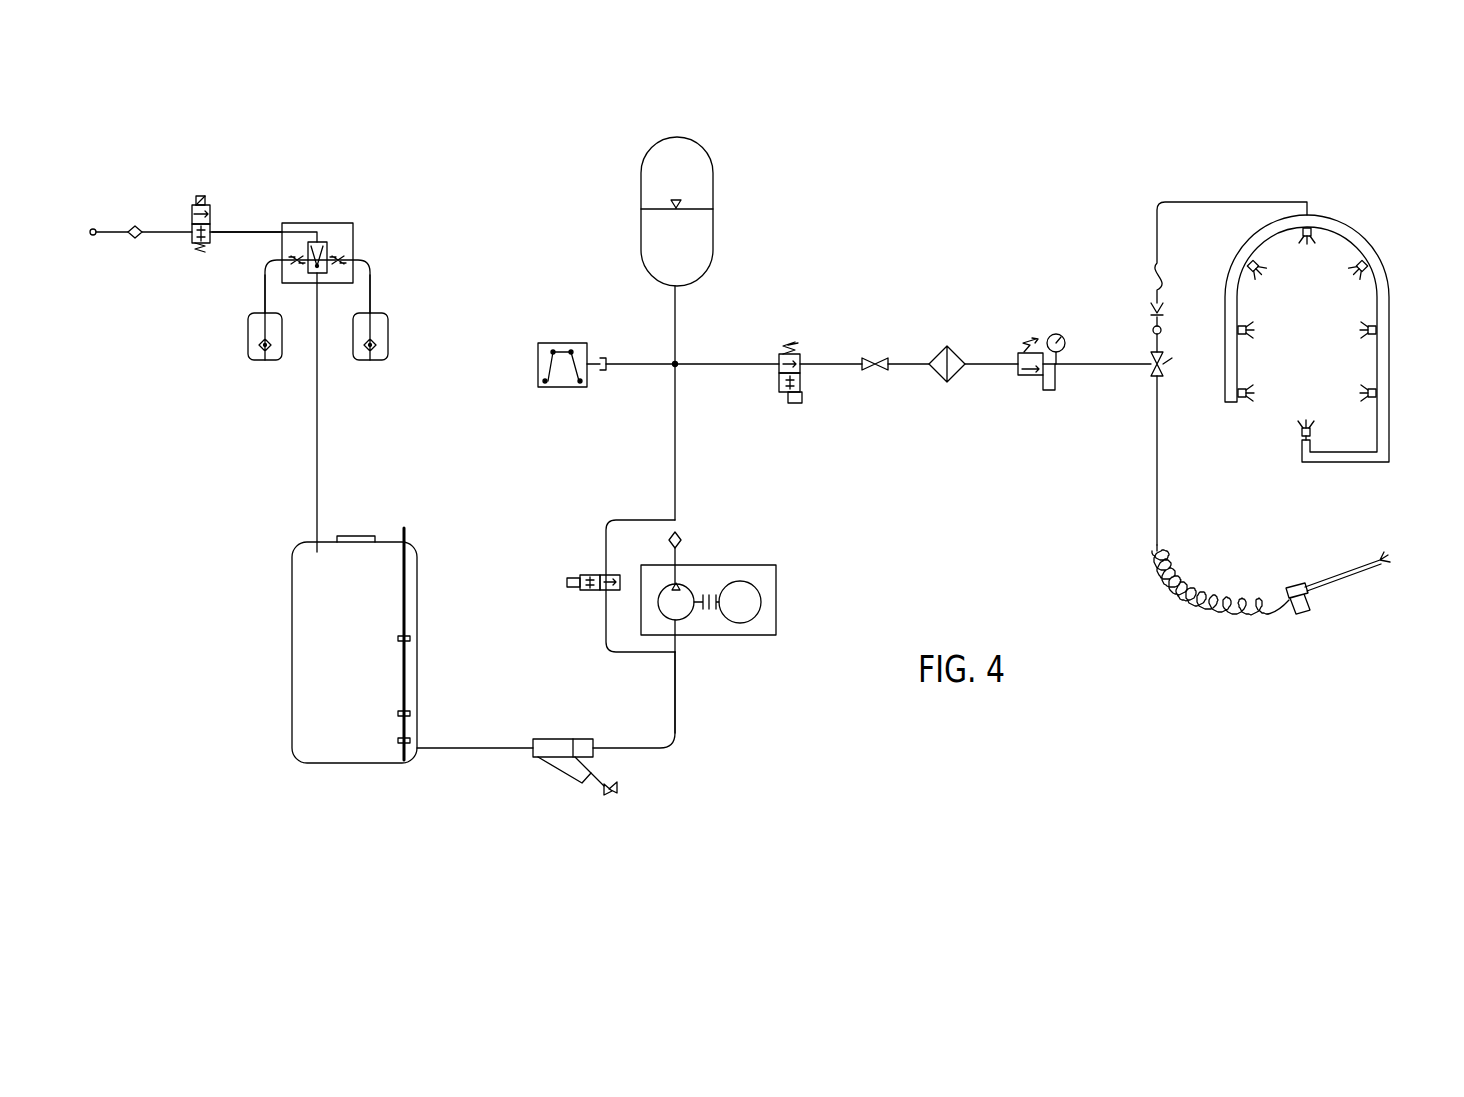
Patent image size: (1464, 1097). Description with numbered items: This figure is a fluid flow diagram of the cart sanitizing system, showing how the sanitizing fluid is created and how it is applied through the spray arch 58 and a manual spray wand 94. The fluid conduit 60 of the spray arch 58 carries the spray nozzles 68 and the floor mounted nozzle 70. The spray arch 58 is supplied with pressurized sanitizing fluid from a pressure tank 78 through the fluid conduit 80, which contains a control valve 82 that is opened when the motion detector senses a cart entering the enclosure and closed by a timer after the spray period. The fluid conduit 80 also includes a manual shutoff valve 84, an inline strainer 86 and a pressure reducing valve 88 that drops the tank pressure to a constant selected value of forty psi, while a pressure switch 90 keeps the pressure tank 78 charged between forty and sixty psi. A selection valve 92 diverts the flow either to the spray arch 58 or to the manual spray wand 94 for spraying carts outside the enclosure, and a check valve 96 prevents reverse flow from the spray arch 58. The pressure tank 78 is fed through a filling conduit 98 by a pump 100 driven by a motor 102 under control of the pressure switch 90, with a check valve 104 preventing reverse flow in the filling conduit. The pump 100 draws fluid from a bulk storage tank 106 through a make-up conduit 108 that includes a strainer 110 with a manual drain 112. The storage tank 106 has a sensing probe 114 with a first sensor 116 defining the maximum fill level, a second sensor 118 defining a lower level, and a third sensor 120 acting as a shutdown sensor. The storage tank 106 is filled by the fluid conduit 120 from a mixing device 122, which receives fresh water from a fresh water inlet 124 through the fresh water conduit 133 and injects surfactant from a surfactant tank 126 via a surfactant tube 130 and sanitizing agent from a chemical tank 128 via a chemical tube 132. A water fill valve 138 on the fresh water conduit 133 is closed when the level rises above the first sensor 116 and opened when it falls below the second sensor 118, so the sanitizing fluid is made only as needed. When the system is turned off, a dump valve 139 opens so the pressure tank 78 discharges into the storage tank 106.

The spray arch 58 is at (1340, 308).
The fluid conduit 60 is at (1317, 217).
The spray nozzles 68 is at (1242, 388).
The floor mounted nozzle 70 is at (1300, 433).
The pressure tank 78 is at (713, 172).
The fluid conduit 80 is at (706, 362).
The control valve 82 is at (800, 356).
The manual shutoff valve 84 is at (882, 360).
The inline strainer 86 is at (958, 353).
The pressure reducing valve 88 is at (1024, 378).
The pressure switch 90 is at (558, 342).
The selection valve 92 is at (1152, 366).
The manual spray wand 94 is at (1292, 585).
The check valve 96 is at (1162, 330).
The filling conduit 98 is at (678, 445).
The pump 100 is at (684, 582).
The motor 102 is at (748, 583).
The check valve 104 is at (680, 533).
The bulk storage tank 106 is at (385, 540).
The make-up conduit 108 is at (678, 700).
The strainer 110 is at (566, 710).
The manual drain 112 is at (612, 797).
The sensing probe 114 is at (405, 532).
The first sensor 116 is at (410, 637).
The second sensor 118 is at (410, 712).
The third sensor 120 is at (318, 405).
The mixing device 122 is at (330, 222).
The fresh water inlet 124 is at (94, 229).
The surfactant tank 126 is at (385, 315).
The chemical tank 128 is at (250, 358).
The surfactant tube 130 is at (372, 265).
The chemical tube 132 is at (263, 303).
The fresh water conduit 133 is at (245, 232).
The water fill valve 138 is at (210, 207).
The dump valve 139 is at (582, 575).